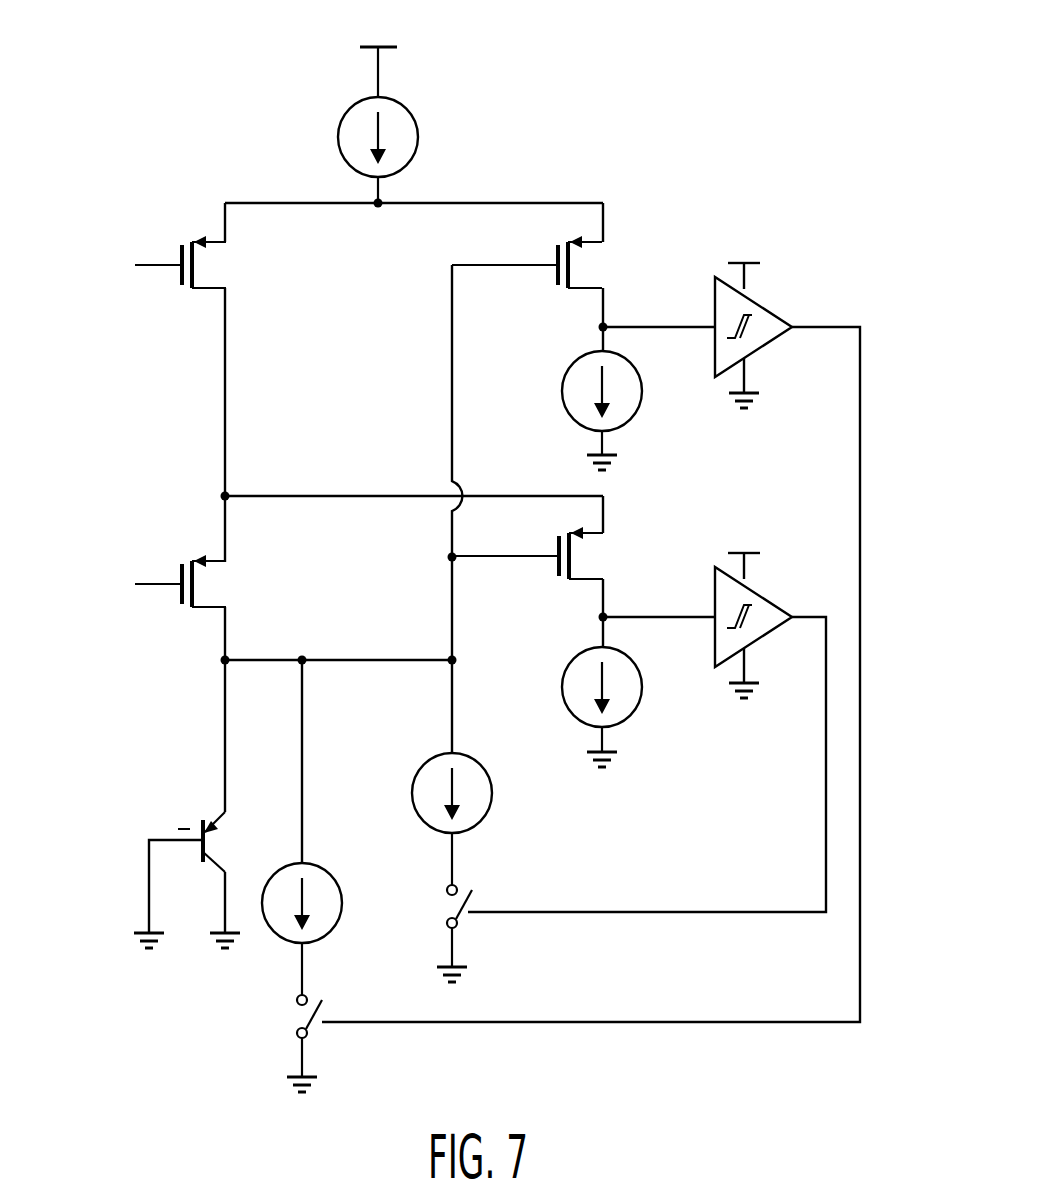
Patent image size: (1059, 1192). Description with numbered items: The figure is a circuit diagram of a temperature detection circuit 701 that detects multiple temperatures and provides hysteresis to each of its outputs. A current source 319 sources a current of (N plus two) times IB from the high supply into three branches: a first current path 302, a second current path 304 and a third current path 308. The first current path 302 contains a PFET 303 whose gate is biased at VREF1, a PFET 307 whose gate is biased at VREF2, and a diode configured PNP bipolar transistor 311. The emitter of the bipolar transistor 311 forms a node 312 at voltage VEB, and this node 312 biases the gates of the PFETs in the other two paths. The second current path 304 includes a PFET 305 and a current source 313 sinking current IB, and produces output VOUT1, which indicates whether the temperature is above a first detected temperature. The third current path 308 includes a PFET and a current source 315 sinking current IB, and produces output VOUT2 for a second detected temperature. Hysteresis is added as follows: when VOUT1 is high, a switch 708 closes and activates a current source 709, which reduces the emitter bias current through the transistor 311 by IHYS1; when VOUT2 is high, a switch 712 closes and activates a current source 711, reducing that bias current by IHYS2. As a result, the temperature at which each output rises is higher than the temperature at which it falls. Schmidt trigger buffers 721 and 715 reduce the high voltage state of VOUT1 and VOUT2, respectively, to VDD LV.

The temperature detection circuit 701 is at (802, 88).
The first current path 302 is at (218, 186).
The PFET 303 is at (197, 266).
The second current path 304 is at (611, 186).
The PFET 305 is at (573, 268).
The PFET 307 is at (197, 587).
The third current path 308 is at (618, 491).
The diode configured PNP bipolar transistor 311 is at (217, 852).
The node 312 is at (222, 663).
The current source 313 is at (577, 357).
The current source 315 is at (577, 654).
The current source 319 is at (340, 127).
The switch 708 is at (315, 1032).
The current source 709 is at (322, 866).
The current source 711 is at (470, 757).
The switch 712 is at (466, 926).
The Schmidt trigger buffer 715 is at (757, 590).
The Schmidt trigger buffer 721 is at (758, 298).